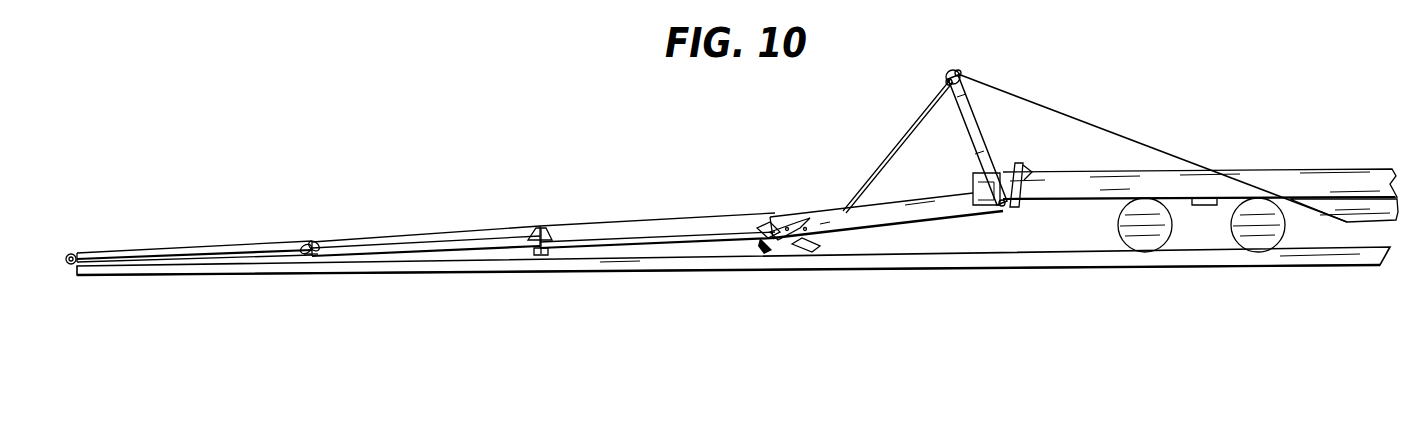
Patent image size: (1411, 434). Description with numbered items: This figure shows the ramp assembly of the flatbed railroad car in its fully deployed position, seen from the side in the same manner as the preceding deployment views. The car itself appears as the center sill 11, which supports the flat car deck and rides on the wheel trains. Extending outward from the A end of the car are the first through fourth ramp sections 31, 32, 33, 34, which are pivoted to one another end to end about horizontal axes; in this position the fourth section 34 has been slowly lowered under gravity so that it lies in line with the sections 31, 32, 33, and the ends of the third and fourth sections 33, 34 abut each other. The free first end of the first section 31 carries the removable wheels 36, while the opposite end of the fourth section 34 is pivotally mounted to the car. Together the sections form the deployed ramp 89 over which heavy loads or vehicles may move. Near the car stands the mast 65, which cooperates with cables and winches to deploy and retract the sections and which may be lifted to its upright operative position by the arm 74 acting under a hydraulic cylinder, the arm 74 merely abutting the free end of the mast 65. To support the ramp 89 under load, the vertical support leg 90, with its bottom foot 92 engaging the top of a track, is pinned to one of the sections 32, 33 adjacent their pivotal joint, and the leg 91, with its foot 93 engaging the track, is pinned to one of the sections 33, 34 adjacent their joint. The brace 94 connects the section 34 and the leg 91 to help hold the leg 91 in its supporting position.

The center sill 11 is at (1337, 208).
The first ramp section 31 is at (264, 243).
The second ramp section 32 is at (457, 233).
The third ramp section 33 is at (617, 223).
The fourth ramp section 34 is at (810, 208).
The removable wheels 36 is at (76, 255).
The mast 65 is at (962, 132).
The arm 74 is at (1022, 164).
The ramp 89 is at (650, 203).
The vertical support leg 90 is at (547, 253).
The leg 91 is at (767, 255).
The bottom foot 92 is at (538, 255).
The foot 93 is at (787, 255).
The brace 94 is at (797, 247).